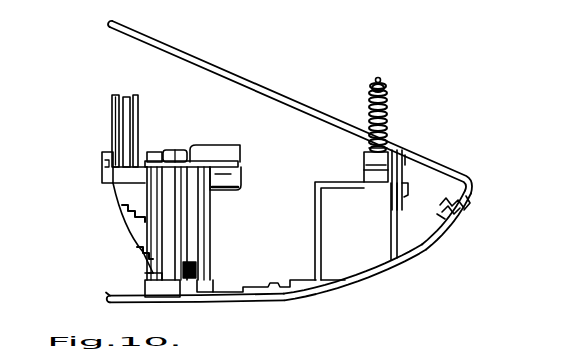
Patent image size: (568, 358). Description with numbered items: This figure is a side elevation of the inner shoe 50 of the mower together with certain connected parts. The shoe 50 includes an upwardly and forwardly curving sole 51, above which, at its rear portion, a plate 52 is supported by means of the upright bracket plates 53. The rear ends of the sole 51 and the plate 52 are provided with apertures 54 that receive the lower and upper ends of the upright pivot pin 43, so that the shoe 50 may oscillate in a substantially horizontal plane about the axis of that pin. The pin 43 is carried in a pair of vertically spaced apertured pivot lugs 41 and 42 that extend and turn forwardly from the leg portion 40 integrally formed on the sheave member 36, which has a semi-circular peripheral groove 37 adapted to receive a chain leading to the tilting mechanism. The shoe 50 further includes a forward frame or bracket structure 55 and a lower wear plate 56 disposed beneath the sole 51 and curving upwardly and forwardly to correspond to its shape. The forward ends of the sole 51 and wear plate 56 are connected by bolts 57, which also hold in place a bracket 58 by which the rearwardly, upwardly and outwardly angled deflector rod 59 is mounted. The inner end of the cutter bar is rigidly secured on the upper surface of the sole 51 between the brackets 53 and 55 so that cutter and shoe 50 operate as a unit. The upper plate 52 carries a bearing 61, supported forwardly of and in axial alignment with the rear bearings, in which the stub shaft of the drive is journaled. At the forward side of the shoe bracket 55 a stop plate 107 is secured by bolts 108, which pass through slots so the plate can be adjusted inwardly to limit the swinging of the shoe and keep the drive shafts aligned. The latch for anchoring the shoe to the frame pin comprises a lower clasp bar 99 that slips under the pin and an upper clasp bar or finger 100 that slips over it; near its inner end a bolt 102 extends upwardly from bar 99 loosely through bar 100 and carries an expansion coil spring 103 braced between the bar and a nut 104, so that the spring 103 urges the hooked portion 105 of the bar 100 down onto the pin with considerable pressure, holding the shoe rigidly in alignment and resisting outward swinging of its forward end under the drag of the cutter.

The sheave member 36 is at (112, 100).
The semi-circular peripheral groove 37 is at (129, 96).
The leg portion 40 is at (118, 214).
The apertured pivot lug 41 is at (176, 150).
The apertured pivot lug 42 is at (153, 273).
The upright pivot pin 43 is at (163, 223).
The inner shoe 50 is at (429, 249).
The sole 51 is at (258, 300).
The plate 52 is at (222, 160).
The upright bracket plates 53 is at (211, 248).
The apertures 54 is at (157, 151).
The forward frame or bracket structure 55 is at (322, 213).
The lower wear plate 56 is at (380, 279).
The bolts 57 is at (438, 204).
The bracket 58 is at (469, 206).
The deflector rod 59 is at (281, 97).
The bearing 61 is at (242, 179).
The lower clasp bar 99 is at (364, 178).
The upper clasp bar or finger 100 is at (364, 170).
The bolt 102 is at (378, 78).
The expansion coil spring 103 is at (387, 117).
The nut 104 is at (386, 92).
The hooked portion 105 is at (391, 148).
The stop plate 107 is at (416, 161).
The bolts 108 is at (403, 211).